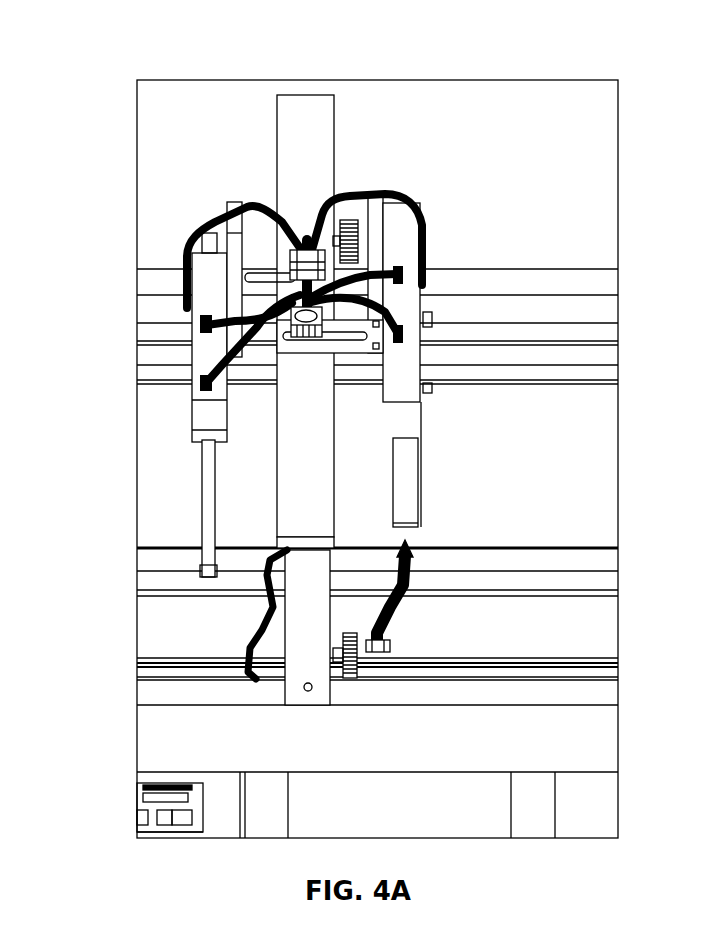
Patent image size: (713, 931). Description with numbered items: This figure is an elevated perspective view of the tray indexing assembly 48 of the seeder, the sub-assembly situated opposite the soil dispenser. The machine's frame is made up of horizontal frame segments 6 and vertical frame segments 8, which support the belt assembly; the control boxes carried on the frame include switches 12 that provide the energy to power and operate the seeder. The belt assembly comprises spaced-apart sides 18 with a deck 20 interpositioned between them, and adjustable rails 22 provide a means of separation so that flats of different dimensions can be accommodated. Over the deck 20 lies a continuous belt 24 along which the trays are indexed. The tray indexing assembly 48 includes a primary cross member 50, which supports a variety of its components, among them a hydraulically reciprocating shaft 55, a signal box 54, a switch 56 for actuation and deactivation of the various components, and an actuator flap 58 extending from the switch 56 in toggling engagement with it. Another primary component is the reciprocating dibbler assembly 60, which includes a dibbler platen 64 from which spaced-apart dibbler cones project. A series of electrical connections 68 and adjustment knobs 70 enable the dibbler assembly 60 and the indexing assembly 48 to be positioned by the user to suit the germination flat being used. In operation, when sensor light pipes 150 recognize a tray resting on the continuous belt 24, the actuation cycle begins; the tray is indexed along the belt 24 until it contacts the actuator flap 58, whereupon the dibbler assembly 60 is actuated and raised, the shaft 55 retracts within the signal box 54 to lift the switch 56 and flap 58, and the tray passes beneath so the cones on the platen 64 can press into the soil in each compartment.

The horizontal frame segments 6 is at (590, 762).
The vertical frame segments 8 is at (510, 803).
The switches 12 is at (197, 804).
The sides 18 is at (381, 235).
The deck 20 is at (217, 603).
The adjustable rails 22 is at (477, 563).
The continuous belt 24 is at (420, 459).
The tray indexing assembly 48 is at (420, 250).
The primary cross member 50 is at (302, 502).
The signal box 54 is at (377, 294).
The hydraulically reciprocating shaft 55 is at (377, 340).
The switch 56 is at (377, 346).
The actuator flap 58 is at (466, 464).
The reciprocating dibbler assembly 60 is at (291, 188).
The dibbler platen 64 is at (205, 518).
The electrical connections 68 is at (483, 232).
The adjustment knobs 70 is at (375, 363).
The sensor light pipes 150 is at (420, 583).